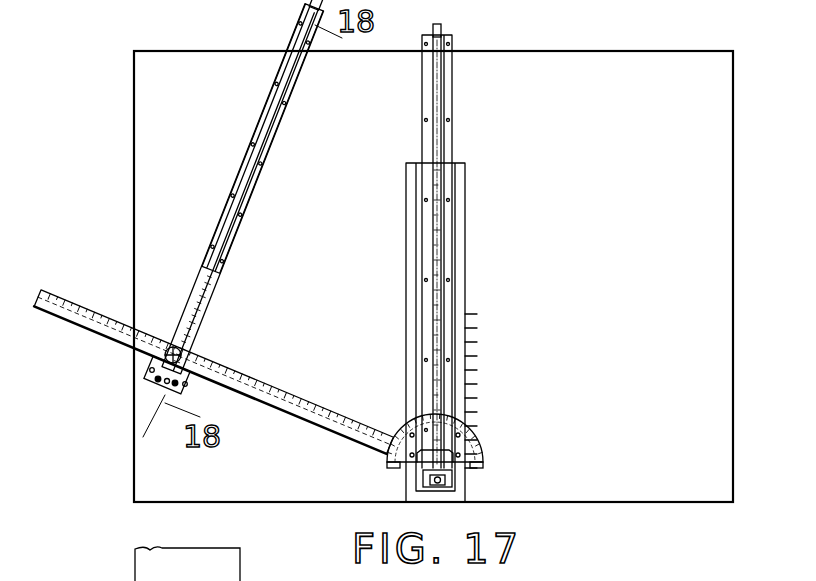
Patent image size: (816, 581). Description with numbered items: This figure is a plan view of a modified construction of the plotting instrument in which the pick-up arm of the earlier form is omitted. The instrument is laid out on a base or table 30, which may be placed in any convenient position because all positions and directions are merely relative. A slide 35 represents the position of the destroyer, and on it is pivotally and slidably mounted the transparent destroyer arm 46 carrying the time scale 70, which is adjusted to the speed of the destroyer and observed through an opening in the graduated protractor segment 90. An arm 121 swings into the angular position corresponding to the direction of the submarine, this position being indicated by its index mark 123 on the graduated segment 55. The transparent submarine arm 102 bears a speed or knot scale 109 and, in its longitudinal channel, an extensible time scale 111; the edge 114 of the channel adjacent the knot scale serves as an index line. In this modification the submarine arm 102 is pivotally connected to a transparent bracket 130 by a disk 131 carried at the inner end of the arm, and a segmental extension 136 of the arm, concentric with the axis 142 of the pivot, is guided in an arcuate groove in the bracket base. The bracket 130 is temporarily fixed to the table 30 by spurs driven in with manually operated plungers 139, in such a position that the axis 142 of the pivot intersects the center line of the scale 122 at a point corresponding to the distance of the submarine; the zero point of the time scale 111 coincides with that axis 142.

The table 30 is at (727, 432).
The slide 35 is at (450, 415).
The destroyer arm 46 is at (451, 236).
The segment 55 is at (470, 428).
The time scale 70 is at (430, 150).
The protractor segment 90 is at (387, 457).
The submarine arm 102 is at (210, 225).
The speed scale 109 is at (190, 304).
The time scale 111 is at (252, 184).
The edge of channel 114 is at (244, 187).
The arm 121 is at (269, 380).
The scale 122 is at (246, 386).
The index mark 123 is at (388, 432).
The bracket 130 is at (143, 380).
The disk 131 is at (192, 360).
The segmental extension 136 is at (190, 382).
The plungers 139 is at (172, 385).
The axis 142 is at (169, 347).